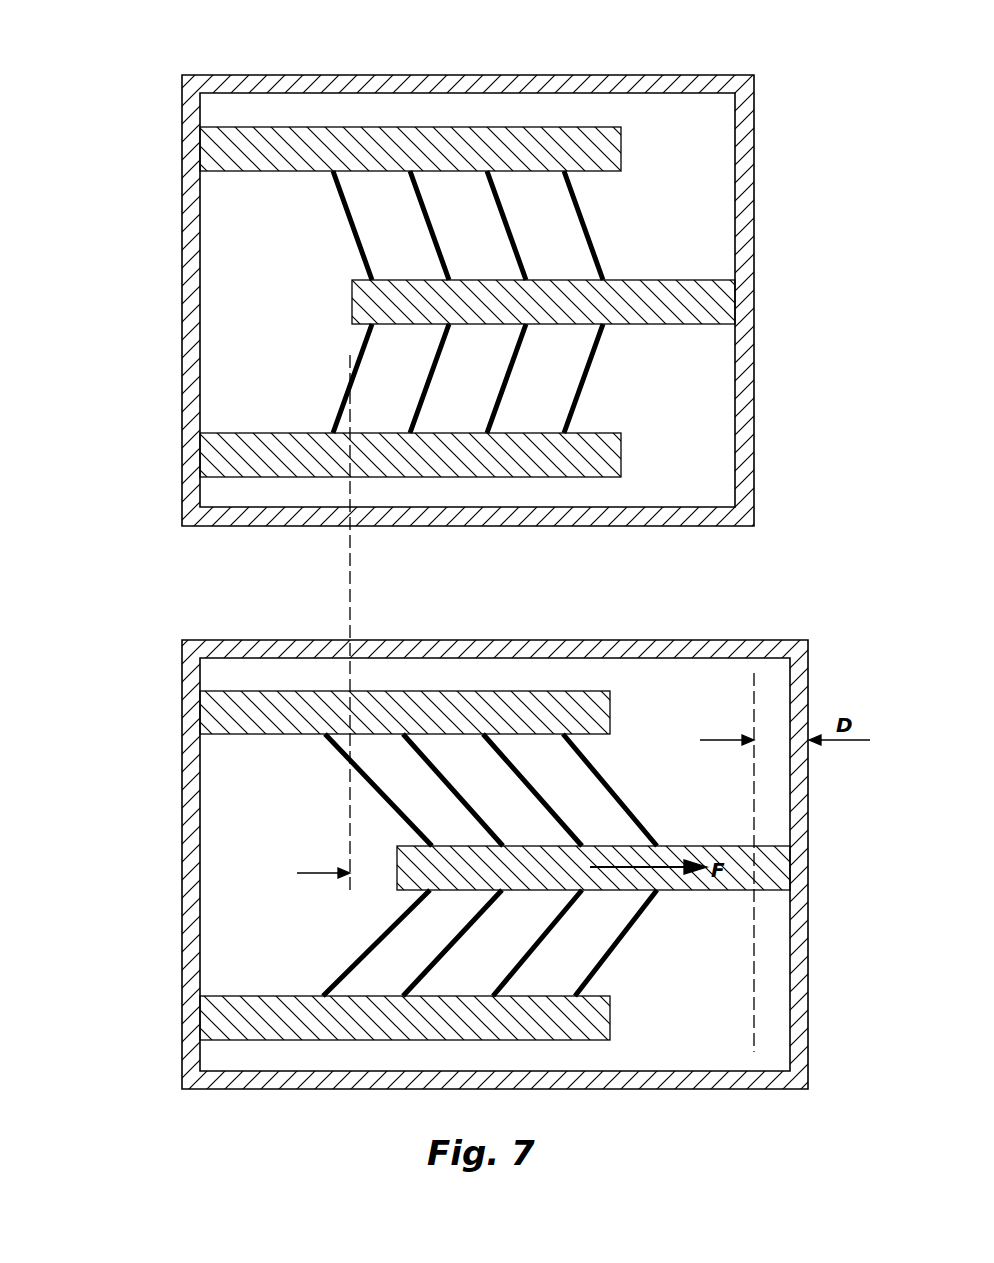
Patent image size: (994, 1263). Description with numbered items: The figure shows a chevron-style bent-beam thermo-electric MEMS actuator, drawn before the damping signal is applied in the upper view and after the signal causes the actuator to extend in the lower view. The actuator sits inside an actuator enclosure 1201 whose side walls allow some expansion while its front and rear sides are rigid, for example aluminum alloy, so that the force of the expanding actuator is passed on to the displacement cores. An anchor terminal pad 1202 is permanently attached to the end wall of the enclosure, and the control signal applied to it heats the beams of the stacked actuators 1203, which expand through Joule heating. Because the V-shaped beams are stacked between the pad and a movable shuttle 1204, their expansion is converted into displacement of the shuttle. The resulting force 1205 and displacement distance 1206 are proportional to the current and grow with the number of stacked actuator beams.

The actuator enclosure 1201 is at (268, 75).
The anchor terminal pad 1202 is at (233, 160).
The beams of the stacked actuators 1203 is at (348, 237).
The movable shuttle 1204 is at (382, 309).
The force 1205 is at (650, 856).
The distance 1206 is at (288, 865).